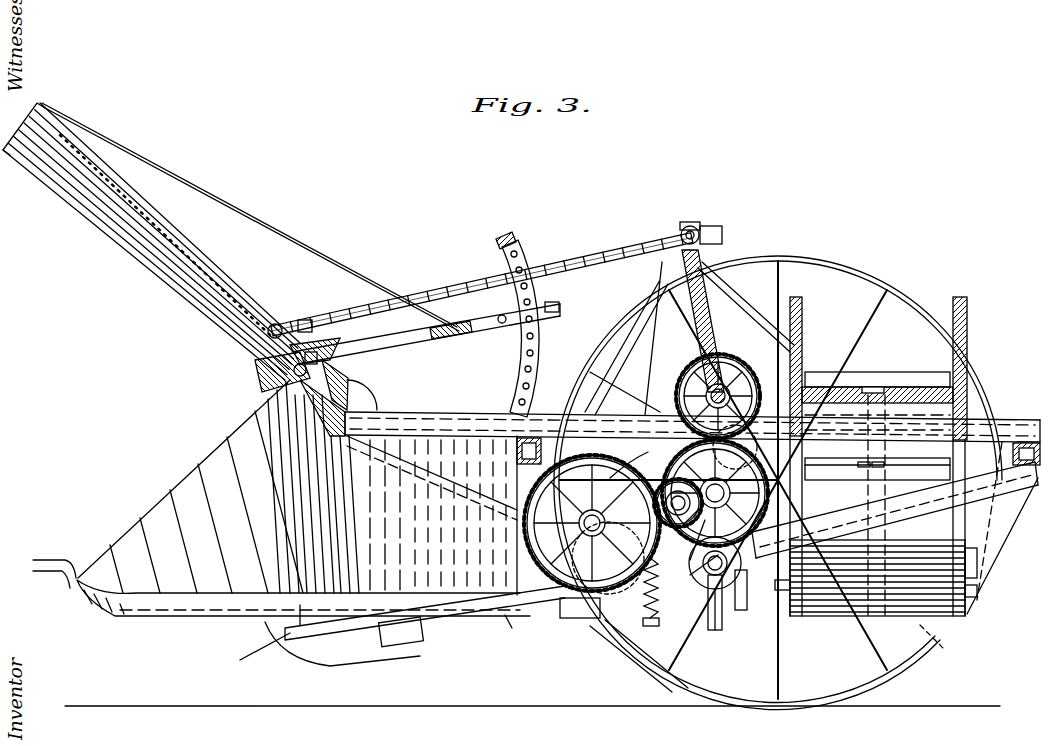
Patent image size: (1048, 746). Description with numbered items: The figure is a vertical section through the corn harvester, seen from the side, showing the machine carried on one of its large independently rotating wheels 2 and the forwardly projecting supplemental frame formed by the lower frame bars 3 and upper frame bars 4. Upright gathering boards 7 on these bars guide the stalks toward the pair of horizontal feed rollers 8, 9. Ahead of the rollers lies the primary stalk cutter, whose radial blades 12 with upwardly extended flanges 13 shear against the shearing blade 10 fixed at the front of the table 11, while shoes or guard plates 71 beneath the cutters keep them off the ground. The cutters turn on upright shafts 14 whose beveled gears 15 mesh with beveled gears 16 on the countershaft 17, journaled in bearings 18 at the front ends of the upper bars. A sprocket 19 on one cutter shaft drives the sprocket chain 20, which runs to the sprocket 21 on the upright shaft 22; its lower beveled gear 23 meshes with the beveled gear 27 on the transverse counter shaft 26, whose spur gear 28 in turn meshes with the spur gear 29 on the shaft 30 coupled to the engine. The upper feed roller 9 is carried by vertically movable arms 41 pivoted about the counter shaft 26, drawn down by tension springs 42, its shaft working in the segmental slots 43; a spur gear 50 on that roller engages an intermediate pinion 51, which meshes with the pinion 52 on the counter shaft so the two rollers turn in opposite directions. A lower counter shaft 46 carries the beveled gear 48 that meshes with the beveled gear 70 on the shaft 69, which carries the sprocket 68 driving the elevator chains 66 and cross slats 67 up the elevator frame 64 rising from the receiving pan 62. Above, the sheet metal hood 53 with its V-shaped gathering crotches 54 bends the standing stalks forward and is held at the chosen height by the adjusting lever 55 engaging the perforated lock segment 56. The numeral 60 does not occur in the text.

The wheels 2 is at (790, 268).
The lower frame bars 3 is at (248, 603).
The upper frame bars 4 is at (440, 412).
The gathering boards 7 is at (190, 486).
The lower feed roller 8 is at (584, 625).
The upper feed roller 9 is at (525, 530).
The shearing blade 10 is at (462, 628).
The table 11 is at (516, 630).
The radial blades 12 is at (300, 655).
The upwardly extended flanges 13 is at (300, 628).
The upright shafts 14 is at (355, 520).
The beveled gears 15 is at (350, 340).
The beveled gears 16 is at (340, 348).
The countershaft 17 is at (262, 372).
The bearings 18 is at (362, 392).
The sprocket 19 is at (276, 322).
The sprocket chain 20 is at (566, 262).
The sprocket 21 is at (695, 228).
The upright shaft 22 is at (705, 342).
The beveled gear 23 is at (675, 462).
The transverse counter shaft 26 is at (770, 500).
The beveled gear 27 is at (768, 515).
The spur gear 28 is at (765, 495).
The spur gear 29 is at (803, 325).
The shaft 30 is at (722, 385).
The vertically movable arms 41 is at (639, 458).
The tension springs 42 is at (700, 577).
The segmental slots 43 is at (545, 462).
The lower counter shaft 46 is at (652, 622).
The beveled gear 48 is at (717, 575).
The spur gear 50 is at (530, 482).
The intermediate pinion 51 is at (672, 490).
The pinion 52 is at (705, 520).
The sheet metal hood 53 is at (142, 190).
The gathering crotches 54 is at (68, 175).
The adjusting lever 55 is at (496, 312).
The perforated lock segment 56 is at (530, 348).
The sickle 60 is at (62, 560).
The receiving pan 62 is at (985, 540).
The elevator frame 64 is at (968, 325).
The chains 66 is at (890, 418).
The cross slats 67 is at (822, 375).
The sprocket 68 is at (840, 616).
The shaft 69 is at (945, 650).
The beveled gear 70 is at (735, 590).
The shoes or guard plates 71 is at (415, 640).